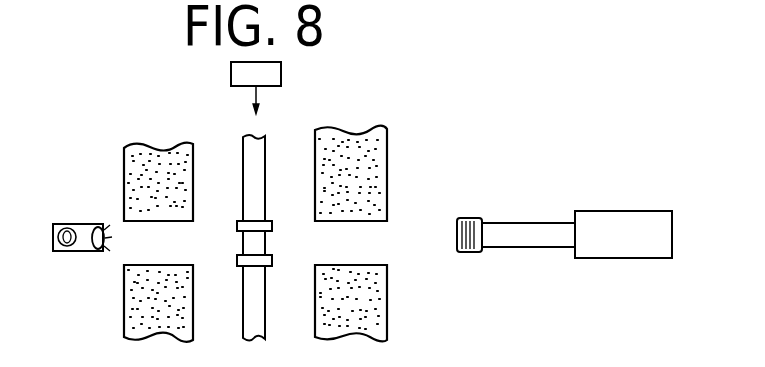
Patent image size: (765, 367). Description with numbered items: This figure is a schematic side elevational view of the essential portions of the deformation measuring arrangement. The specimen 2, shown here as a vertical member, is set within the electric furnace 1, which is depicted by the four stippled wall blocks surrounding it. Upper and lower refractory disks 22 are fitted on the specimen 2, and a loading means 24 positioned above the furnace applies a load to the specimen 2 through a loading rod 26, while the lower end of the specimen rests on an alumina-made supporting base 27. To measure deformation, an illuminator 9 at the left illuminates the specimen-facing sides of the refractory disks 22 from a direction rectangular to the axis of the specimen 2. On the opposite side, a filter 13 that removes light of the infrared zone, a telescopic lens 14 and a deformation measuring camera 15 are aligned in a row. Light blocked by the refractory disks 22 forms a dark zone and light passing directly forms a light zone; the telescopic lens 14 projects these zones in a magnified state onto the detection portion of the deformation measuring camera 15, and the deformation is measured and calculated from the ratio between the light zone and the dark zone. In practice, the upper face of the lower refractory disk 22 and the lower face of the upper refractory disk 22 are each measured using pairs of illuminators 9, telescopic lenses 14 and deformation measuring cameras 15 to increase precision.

The electric furnace 1 is at (357, 178).
The specimen 2 is at (257, 243).
The illuminator 9 is at (66, 254).
The filter 13 is at (470, 218).
The telescopic lens 14 is at (527, 232).
The deformation measuring camera 15 is at (626, 230).
The refractory disk 22 is at (272, 223).
The loading means 24 is at (281, 68).
The loading rod 26 is at (258, 160).
The supporting base 27 is at (255, 313).